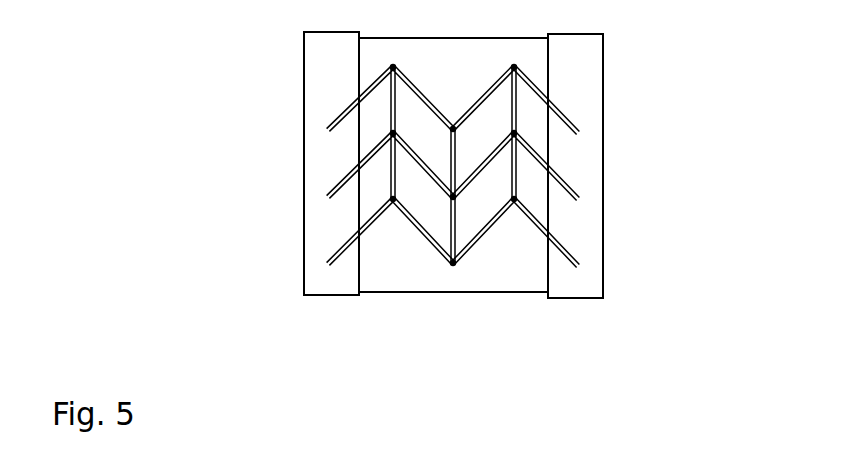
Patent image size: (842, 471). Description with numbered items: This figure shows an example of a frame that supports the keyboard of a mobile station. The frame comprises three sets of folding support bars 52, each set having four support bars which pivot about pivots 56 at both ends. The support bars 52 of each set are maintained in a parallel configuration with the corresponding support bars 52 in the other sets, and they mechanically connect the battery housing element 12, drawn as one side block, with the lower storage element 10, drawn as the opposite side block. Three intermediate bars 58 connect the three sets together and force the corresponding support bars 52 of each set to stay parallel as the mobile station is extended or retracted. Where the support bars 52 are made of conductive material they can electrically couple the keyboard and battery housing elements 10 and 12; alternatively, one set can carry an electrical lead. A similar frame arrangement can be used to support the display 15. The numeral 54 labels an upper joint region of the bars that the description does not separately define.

The lower storage element 10 is at (603, 278).
The battery housing element 12 is at (304, 243).
The display 15 is at (427, 293).
The folding support bars 52 is at (549, 98).
The upper joint 54 is at (520, 66).
The pivots 56 is at (514, 200).
The intermediate bars 58 is at (454, 207).